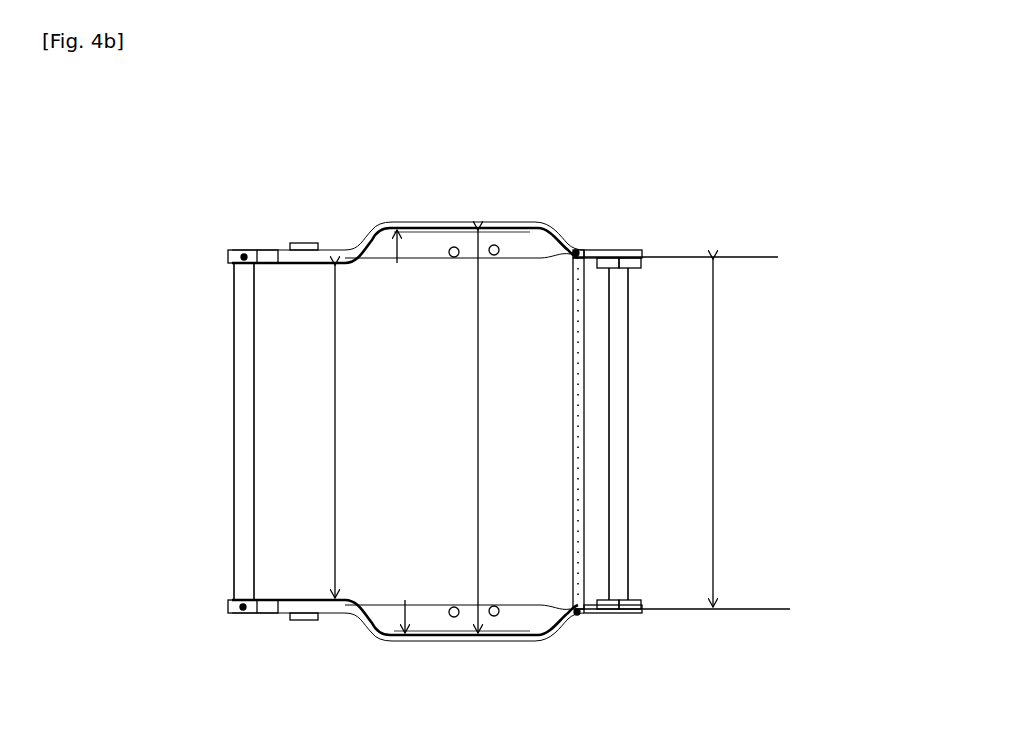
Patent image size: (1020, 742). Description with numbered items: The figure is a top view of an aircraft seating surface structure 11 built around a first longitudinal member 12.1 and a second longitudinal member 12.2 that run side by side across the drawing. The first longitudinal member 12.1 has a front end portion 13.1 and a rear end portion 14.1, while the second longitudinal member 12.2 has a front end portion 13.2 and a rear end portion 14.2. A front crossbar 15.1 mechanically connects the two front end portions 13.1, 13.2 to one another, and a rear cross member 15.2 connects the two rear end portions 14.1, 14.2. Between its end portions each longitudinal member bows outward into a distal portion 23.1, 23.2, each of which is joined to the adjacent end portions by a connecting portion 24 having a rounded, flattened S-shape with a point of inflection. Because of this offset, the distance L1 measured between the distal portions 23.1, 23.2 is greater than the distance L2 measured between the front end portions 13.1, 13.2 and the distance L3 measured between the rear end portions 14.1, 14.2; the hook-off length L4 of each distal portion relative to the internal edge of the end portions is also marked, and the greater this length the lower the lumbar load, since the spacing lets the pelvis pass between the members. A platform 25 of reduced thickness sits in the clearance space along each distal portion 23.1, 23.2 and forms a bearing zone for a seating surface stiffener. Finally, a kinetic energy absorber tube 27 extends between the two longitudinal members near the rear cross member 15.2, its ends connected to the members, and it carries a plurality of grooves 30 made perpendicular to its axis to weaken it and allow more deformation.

The seating surface structure 11 is at (160, 188).
The first longitudinal member 12.1 is at (369, 226).
The second longitudinal member 12.2 is at (540, 647).
The front end portion 13.1 is at (275, 250).
The front end portion 13.2 is at (285, 608).
The rear end portion 14.1 is at (625, 246).
The rear end portion 14.2 is at (625, 619).
The front crossbar 15.1 is at (235, 420).
The rear cross member 15.2 is at (622, 498).
The distal portion 23.1 is at (452, 228).
The distal portion 23.2 is at (490, 638).
The connecting portion 24 is at (372, 622).
The platform 25 is at (525, 229).
The kinetic energy absorber tube 27 is at (583, 394).
The groove 30 is at (582, 256).
The distance L1 is at (478, 300).
The distance L2 is at (335, 385).
The distance L3 is at (713, 320).
The hook-off length L4 is at (413, 222).